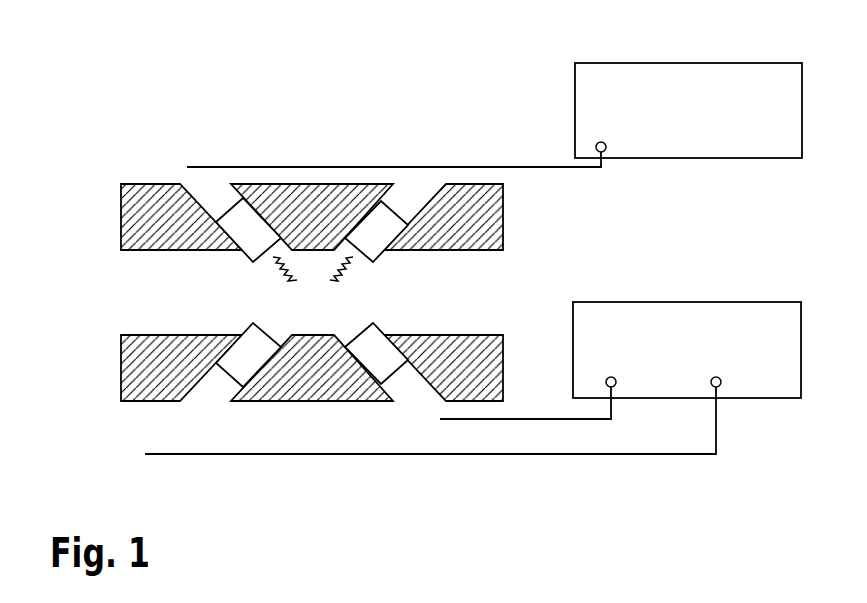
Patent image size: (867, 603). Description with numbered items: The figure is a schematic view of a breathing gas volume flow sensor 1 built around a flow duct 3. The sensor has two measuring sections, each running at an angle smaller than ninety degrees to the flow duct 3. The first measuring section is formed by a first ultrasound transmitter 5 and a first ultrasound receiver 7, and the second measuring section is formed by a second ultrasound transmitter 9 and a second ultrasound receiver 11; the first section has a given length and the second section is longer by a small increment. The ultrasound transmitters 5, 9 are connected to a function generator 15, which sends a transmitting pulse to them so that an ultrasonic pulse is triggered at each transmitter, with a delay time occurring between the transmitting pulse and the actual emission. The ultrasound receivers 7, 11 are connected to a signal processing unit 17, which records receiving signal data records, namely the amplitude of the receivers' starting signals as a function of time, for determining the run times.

The breathing gas volume flow sensor 1 is at (190, 119).
The flow duct 3 is at (192, 304).
The first ultrasound transmitter 5 is at (187, 167).
The first ultrasound receiver 7 is at (440, 419).
The second ultrasound transmitter 9 is at (442, 167).
The second ultrasound receiver 11 is at (145, 454).
The function generator 15 is at (676, 122).
The signal processing unit 17 is at (675, 357).